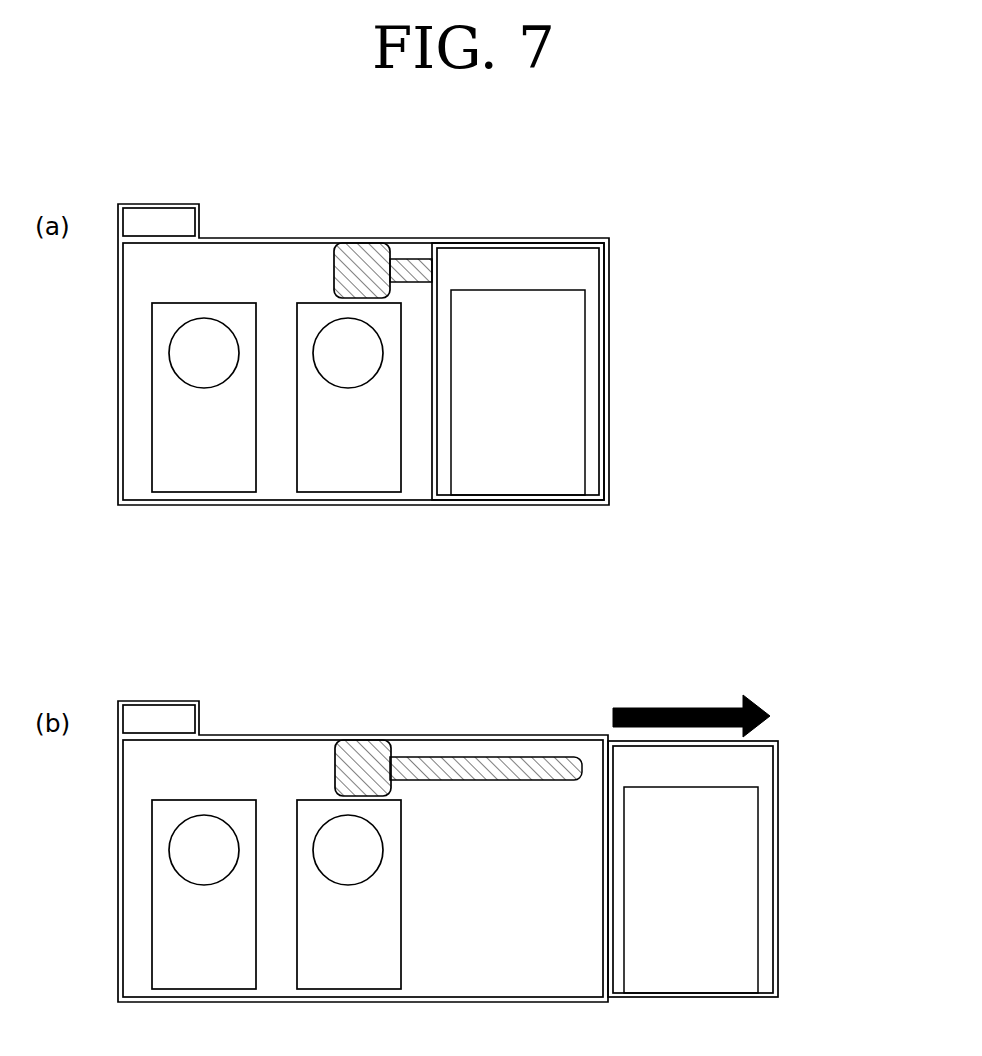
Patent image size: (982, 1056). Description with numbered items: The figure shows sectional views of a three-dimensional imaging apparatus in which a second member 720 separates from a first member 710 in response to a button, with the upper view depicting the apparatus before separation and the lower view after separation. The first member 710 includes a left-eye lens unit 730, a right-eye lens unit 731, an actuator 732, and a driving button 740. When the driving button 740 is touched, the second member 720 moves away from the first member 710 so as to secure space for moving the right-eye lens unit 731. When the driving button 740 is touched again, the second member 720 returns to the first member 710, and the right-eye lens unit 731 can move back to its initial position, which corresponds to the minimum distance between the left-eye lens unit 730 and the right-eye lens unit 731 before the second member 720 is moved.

The first member 710 is at (277, 238).
The second member 720 is at (577, 270).
The left-eye lens unit 730 is at (204, 463).
The right-eye lens unit 731 is at (345, 463).
The actuator 732 is at (360, 263).
The driving button 740 is at (168, 220).